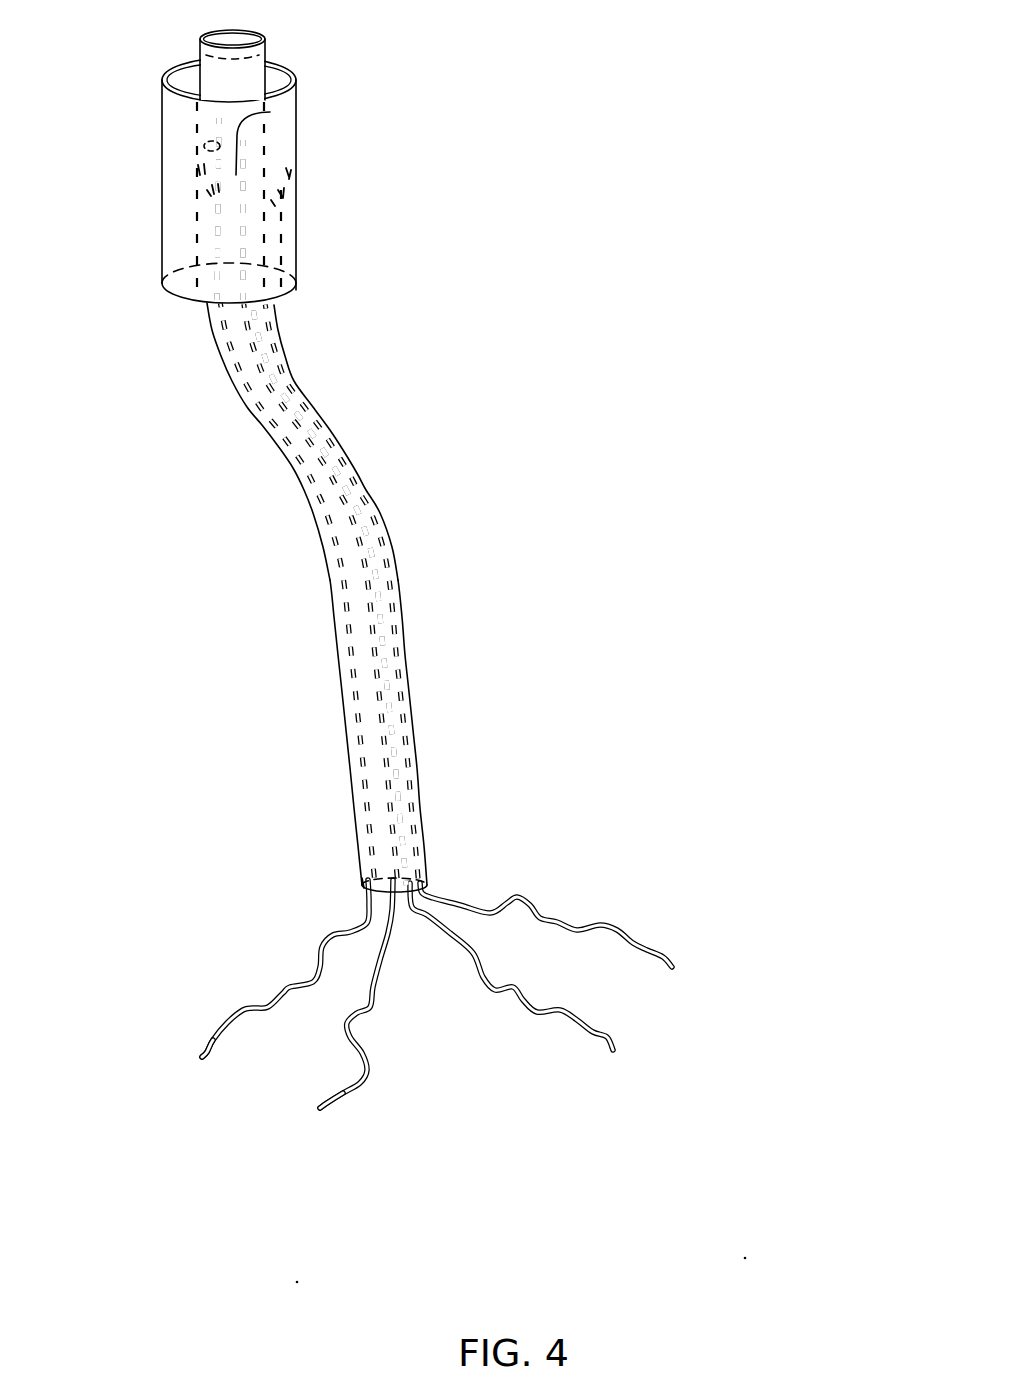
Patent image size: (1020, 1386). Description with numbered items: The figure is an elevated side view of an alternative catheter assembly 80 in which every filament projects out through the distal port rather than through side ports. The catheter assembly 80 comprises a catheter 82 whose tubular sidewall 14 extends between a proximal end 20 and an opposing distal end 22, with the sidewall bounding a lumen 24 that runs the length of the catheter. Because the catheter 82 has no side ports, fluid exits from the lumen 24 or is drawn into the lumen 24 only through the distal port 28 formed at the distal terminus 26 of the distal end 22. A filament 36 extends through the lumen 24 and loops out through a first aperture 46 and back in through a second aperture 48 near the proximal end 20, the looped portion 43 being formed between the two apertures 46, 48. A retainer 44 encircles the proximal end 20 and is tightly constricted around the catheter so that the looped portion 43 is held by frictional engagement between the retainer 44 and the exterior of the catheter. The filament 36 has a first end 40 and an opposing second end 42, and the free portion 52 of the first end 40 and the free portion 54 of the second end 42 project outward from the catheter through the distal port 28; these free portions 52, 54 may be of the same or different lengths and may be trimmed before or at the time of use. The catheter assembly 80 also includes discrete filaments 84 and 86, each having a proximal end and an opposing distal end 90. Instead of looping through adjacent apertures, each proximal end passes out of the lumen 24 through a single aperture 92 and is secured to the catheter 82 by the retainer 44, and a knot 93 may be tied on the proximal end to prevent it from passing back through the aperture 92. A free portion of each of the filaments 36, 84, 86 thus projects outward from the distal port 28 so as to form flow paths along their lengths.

The tubular sidewall 14 is at (294, 372).
The proximal end 20 is at (243, 78).
The distal end 22 is at (417, 732).
The lumen 24 is at (232, 40).
The distal terminus 26 is at (428, 881).
The distal port 28 is at (367, 890).
The filament 36 is at (205, 1050).
The first end 40 is at (243, 1008).
The second end 42 is at (363, 1060).
The looped portion 43 is at (200, 170).
The retainer 44 is at (292, 265).
The first aperture 46 is at (207, 143).
The second aperture 48 is at (210, 190).
The free portion 52 is at (252, 968).
The free portion 54 is at (359, 994).
The catheter assembly 80 is at (588, 188).
The catheter 82 is at (458, 386).
The filament 84 is at (602, 913).
The filament 86 is at (607, 1035).
The distal end 90 is at (663, 960).
The aperture 92 is at (240, 110).
The knot 93 is at (283, 197).